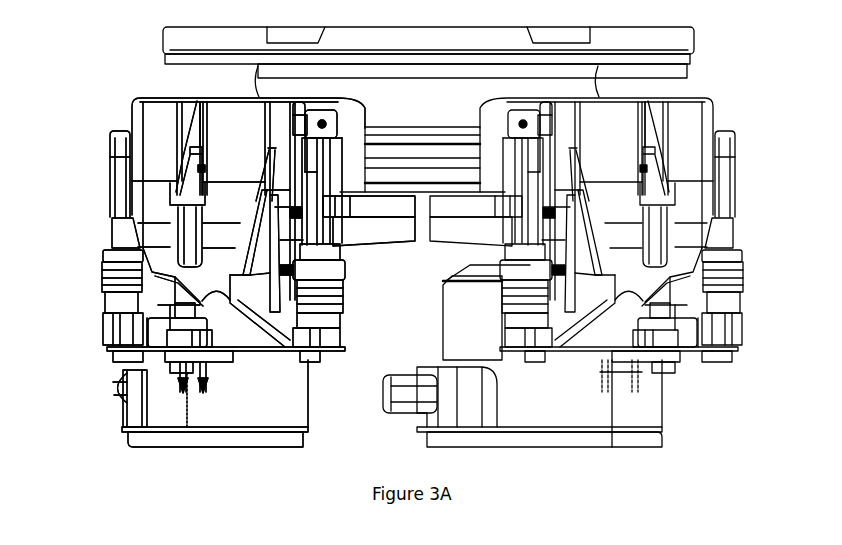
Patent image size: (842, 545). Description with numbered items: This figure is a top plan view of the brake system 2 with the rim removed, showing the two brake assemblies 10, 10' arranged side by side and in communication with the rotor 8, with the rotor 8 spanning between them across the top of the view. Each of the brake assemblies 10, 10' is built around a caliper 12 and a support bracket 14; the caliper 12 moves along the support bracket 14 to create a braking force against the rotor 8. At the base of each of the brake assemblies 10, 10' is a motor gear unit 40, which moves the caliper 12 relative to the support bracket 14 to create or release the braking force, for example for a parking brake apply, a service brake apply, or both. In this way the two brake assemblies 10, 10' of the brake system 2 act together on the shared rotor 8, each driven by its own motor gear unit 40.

The brake system 2 is at (732, 61).
The rotor 8 is at (412, 155).
The brake assembly 10 is at (563, 312).
The brake assembly 10' is at (258, 312).
The caliper 12 is at (158, 117).
The support bracket 14 is at (120, 237).
The motor gear unit 40 is at (183, 410).